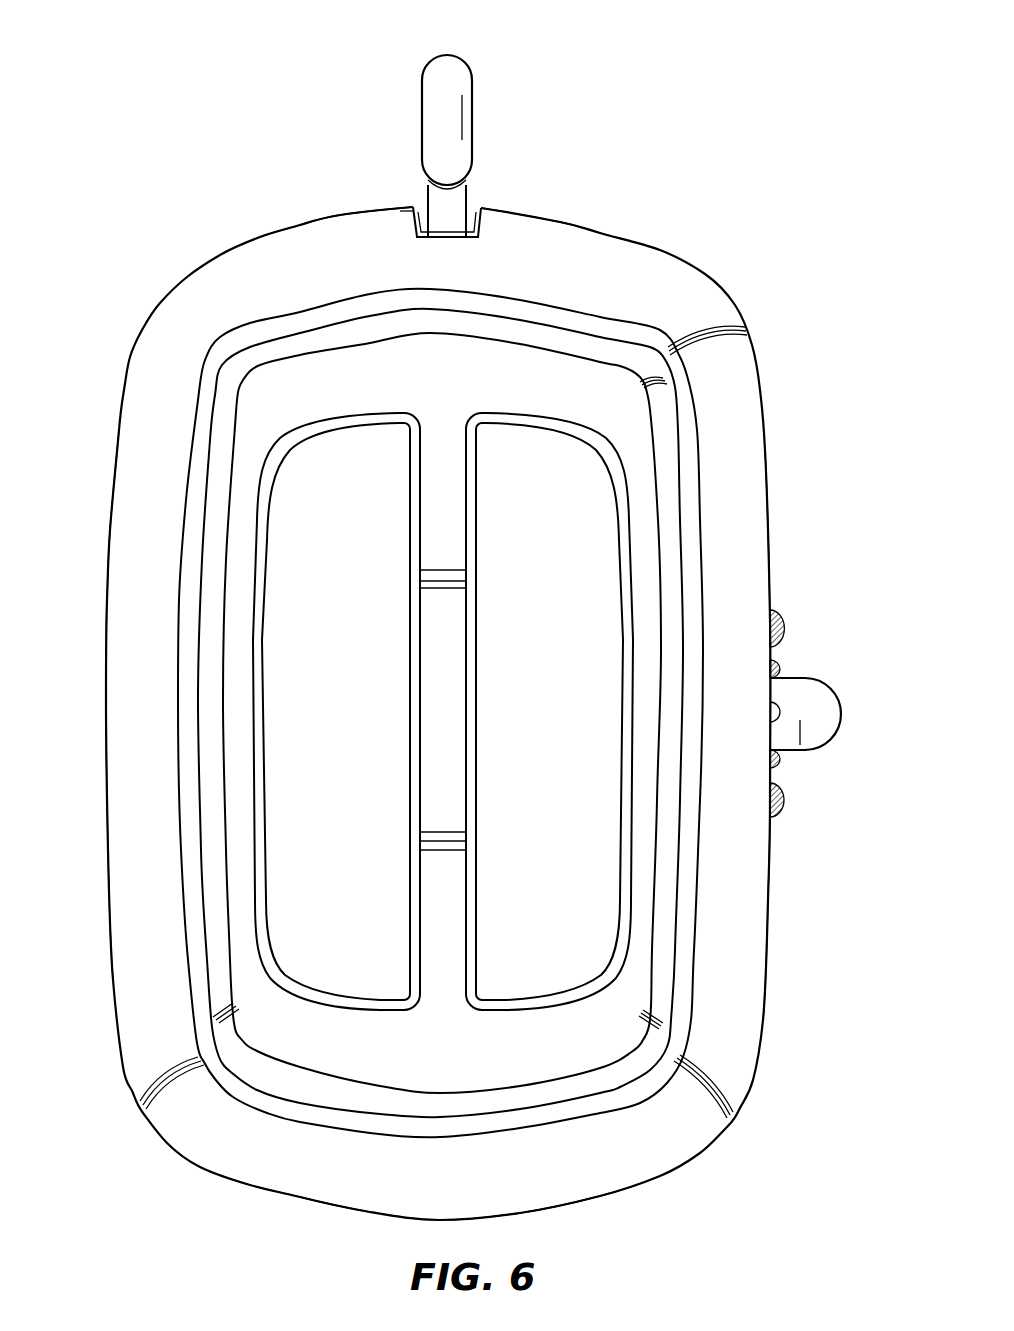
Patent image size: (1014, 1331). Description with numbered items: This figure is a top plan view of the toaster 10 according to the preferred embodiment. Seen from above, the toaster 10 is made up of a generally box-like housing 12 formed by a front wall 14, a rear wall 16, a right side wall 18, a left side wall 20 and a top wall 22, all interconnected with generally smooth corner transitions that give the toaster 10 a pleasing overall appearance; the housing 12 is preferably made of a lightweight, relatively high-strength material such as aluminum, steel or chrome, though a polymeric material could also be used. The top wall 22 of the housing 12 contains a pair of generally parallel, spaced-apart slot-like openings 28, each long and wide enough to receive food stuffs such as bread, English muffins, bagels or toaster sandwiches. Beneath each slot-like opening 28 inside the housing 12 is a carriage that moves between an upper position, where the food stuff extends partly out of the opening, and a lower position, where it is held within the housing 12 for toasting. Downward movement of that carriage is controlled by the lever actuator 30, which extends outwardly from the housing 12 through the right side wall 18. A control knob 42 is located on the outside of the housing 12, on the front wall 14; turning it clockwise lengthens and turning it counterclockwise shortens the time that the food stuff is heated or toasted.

The toaster 10 is at (200, 52).
The housing 12 is at (655, 265).
The front wall 14 is at (770, 503).
The rear wall 16 is at (105, 612).
The right side wall 18 is at (585, 218).
The left side wall 20 is at (605, 1195).
The top wall 22 is at (612, 1010).
The slot-like openings 28 is at (600, 575).
The lever actuator 30 is at (425, 110).
The control knob 42 is at (838, 722).